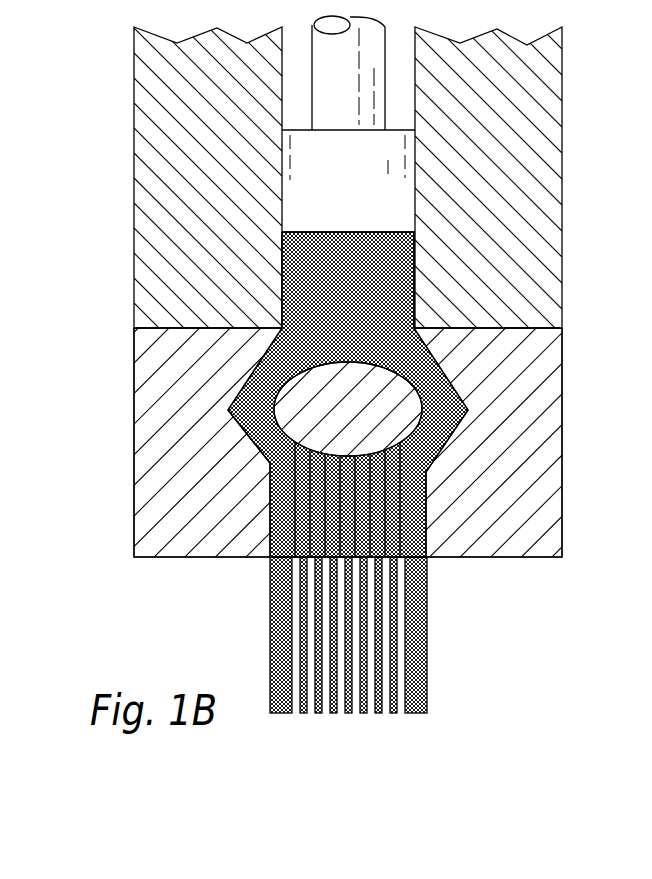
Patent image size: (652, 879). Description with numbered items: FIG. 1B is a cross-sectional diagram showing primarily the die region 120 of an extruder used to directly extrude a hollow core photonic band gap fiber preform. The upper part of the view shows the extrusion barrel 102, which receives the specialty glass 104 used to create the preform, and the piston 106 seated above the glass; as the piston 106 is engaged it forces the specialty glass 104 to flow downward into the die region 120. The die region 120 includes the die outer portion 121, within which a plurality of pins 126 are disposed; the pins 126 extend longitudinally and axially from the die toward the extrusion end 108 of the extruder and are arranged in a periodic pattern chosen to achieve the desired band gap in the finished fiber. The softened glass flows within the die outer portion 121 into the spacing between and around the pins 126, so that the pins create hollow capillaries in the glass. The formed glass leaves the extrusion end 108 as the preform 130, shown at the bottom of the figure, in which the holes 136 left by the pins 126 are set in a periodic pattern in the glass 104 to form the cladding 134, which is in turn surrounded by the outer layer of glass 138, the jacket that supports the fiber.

The extrusion barrel 102 is at (135, 129).
The specialty glass 104 is at (380, 283).
The piston 106 is at (370, 90).
The extrusion end 108 is at (160, 558).
The die region 120 is at (572, 328).
The die outer portion 121 is at (247, 385).
The pins 126 is at (400, 488).
The preform 130 is at (270, 624).
The cladding 134 is at (427, 720).
The holes 136 is at (327, 653).
The outer layer of glass 138 is at (428, 609).